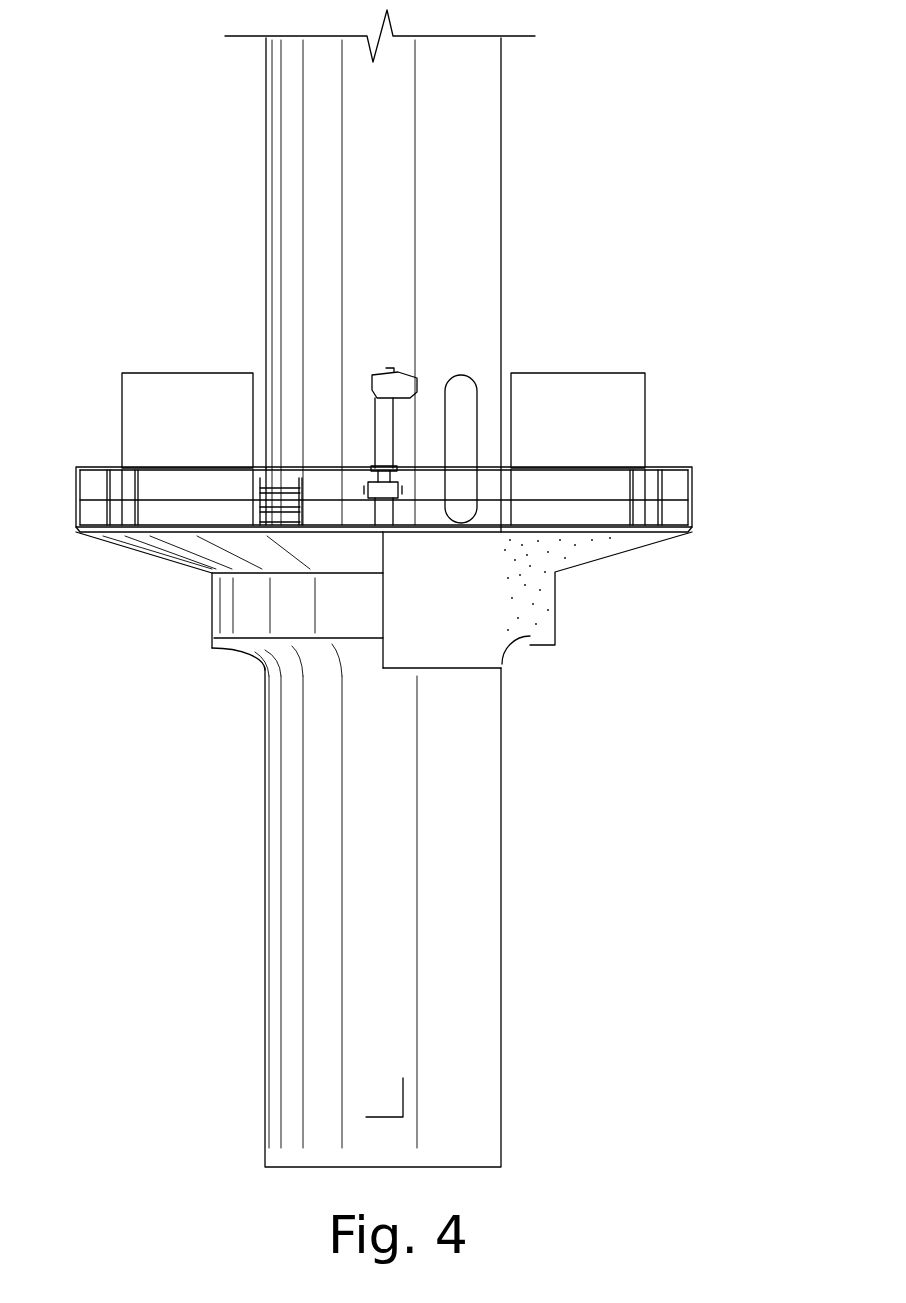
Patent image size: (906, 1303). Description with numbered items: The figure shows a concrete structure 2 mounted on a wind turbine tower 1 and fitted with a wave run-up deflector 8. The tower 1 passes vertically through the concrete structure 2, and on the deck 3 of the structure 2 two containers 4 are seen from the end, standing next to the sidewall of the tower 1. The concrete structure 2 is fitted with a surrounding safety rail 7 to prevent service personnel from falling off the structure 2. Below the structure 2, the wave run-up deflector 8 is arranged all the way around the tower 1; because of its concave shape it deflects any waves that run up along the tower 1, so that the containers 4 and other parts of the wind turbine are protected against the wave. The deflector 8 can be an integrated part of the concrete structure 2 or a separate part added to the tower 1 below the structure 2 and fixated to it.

The wind turbine tower 1 is at (473, 137).
The concrete structure 2 is at (543, 600).
The deck 3 is at (93, 515).
The containers 4 is at (182, 385).
The safety rail 7 is at (693, 475).
The wave run-up deflector 8 is at (527, 640).